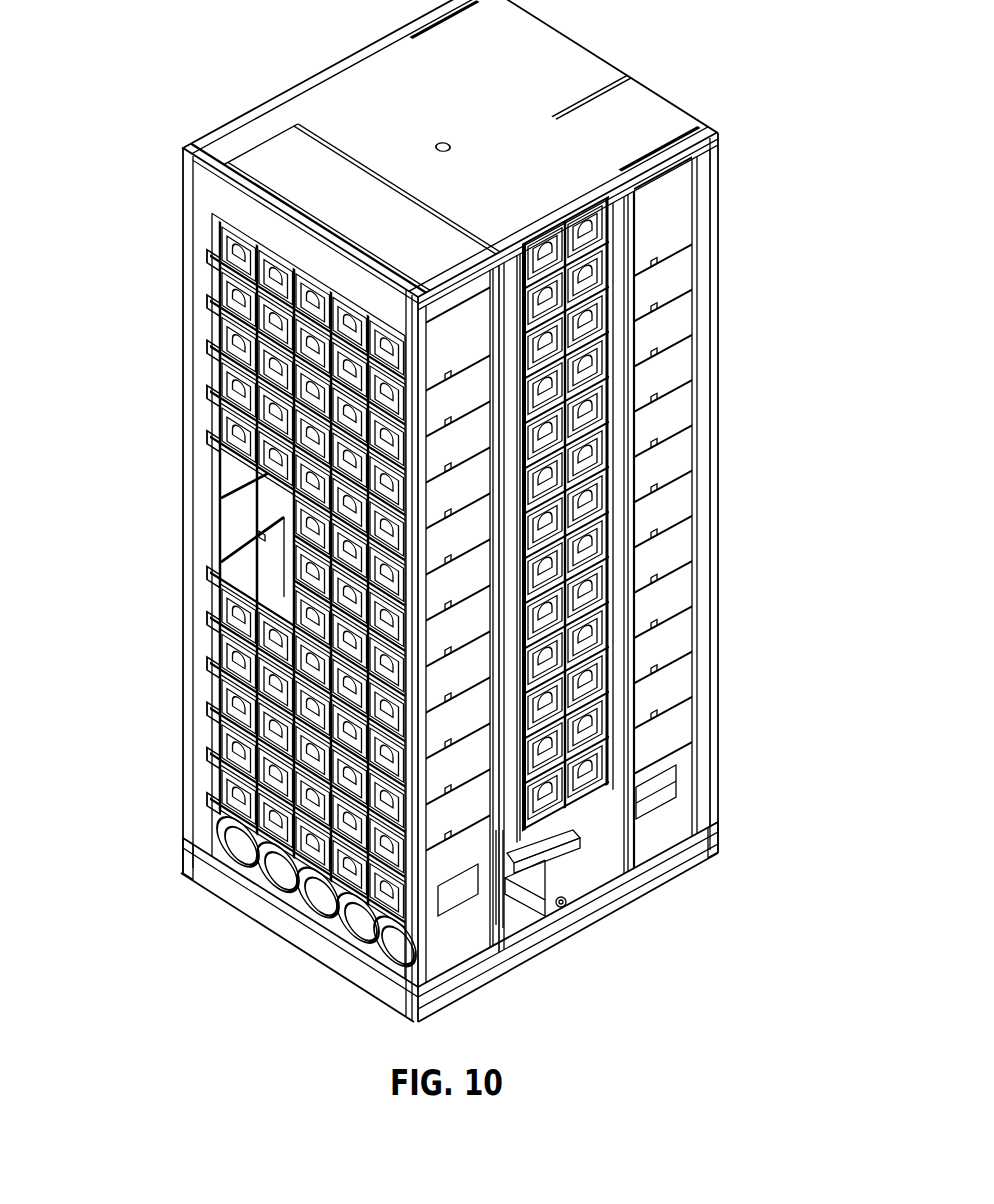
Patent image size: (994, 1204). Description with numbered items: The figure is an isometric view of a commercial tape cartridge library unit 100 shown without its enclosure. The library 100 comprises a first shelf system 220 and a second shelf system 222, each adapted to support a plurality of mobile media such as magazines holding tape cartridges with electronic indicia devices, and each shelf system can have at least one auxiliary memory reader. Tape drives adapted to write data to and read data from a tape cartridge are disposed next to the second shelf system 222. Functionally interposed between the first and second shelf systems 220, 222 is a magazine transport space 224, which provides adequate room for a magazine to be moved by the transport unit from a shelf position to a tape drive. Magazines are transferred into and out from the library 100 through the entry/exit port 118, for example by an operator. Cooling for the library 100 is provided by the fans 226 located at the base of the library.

The T-950 library unit 100 is at (448, 511).
The entry/exit port 118 is at (247, 543).
The first shelf system 220 is at (160, 653).
The second shelf system 222 is at (737, 522).
The magazine transport space 224 is at (580, 867).
The fans 226 is at (232, 900).